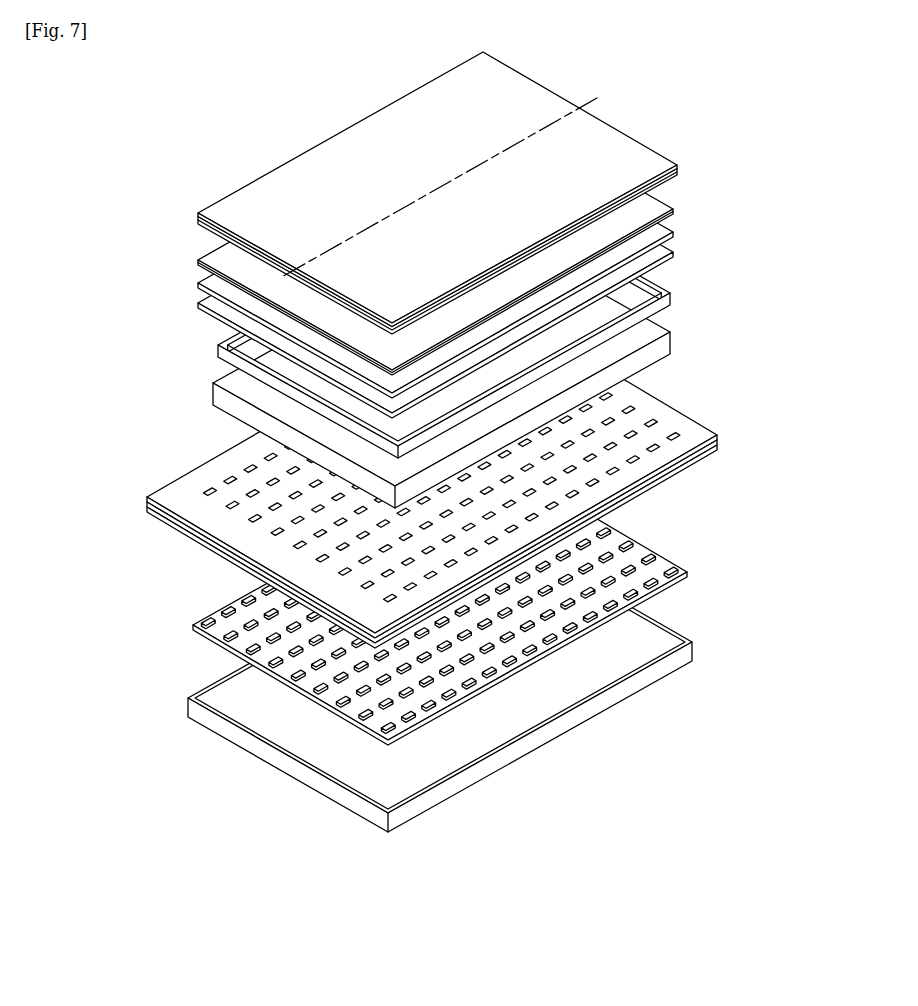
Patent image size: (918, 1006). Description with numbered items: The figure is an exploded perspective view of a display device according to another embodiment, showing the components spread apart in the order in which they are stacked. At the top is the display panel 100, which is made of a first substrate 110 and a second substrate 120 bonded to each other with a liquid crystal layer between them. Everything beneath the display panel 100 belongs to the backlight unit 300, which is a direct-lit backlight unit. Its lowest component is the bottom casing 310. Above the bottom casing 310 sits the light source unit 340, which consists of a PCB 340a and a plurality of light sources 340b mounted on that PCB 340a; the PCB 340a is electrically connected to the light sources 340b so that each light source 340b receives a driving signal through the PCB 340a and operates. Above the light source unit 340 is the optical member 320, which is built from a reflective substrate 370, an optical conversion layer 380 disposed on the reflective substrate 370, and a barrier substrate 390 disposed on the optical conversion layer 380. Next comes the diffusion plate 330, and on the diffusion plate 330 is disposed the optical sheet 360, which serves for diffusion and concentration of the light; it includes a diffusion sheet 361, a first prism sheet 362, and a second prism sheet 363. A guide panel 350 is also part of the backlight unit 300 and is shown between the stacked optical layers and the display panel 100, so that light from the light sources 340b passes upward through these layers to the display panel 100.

The display panel 100 is at (480, 193).
The first substrate 110 is at (677, 173).
The second substrate 120 is at (677, 165).
The backlight unit 300 is at (488, 442).
The bottom casing 310 is at (690, 650).
The optical member 320 is at (461, 473).
The diffusion plate 330 is at (671, 340).
The light source unit 340 is at (480, 601).
The PCB 340a is at (662, 552).
The light source 340b is at (668, 575).
The guide panel 350 is at (670, 297).
The optical sheet 360 is at (481, 258).
The diffusion sheet 361 is at (673, 254).
The first prism sheet 362 is at (673, 234).
The second prism sheet 363 is at (673, 211).
The reflective substrate 370 is at (650, 490).
The optical conversion layer 380 is at (668, 474).
The barrier substrate 390 is at (692, 454).